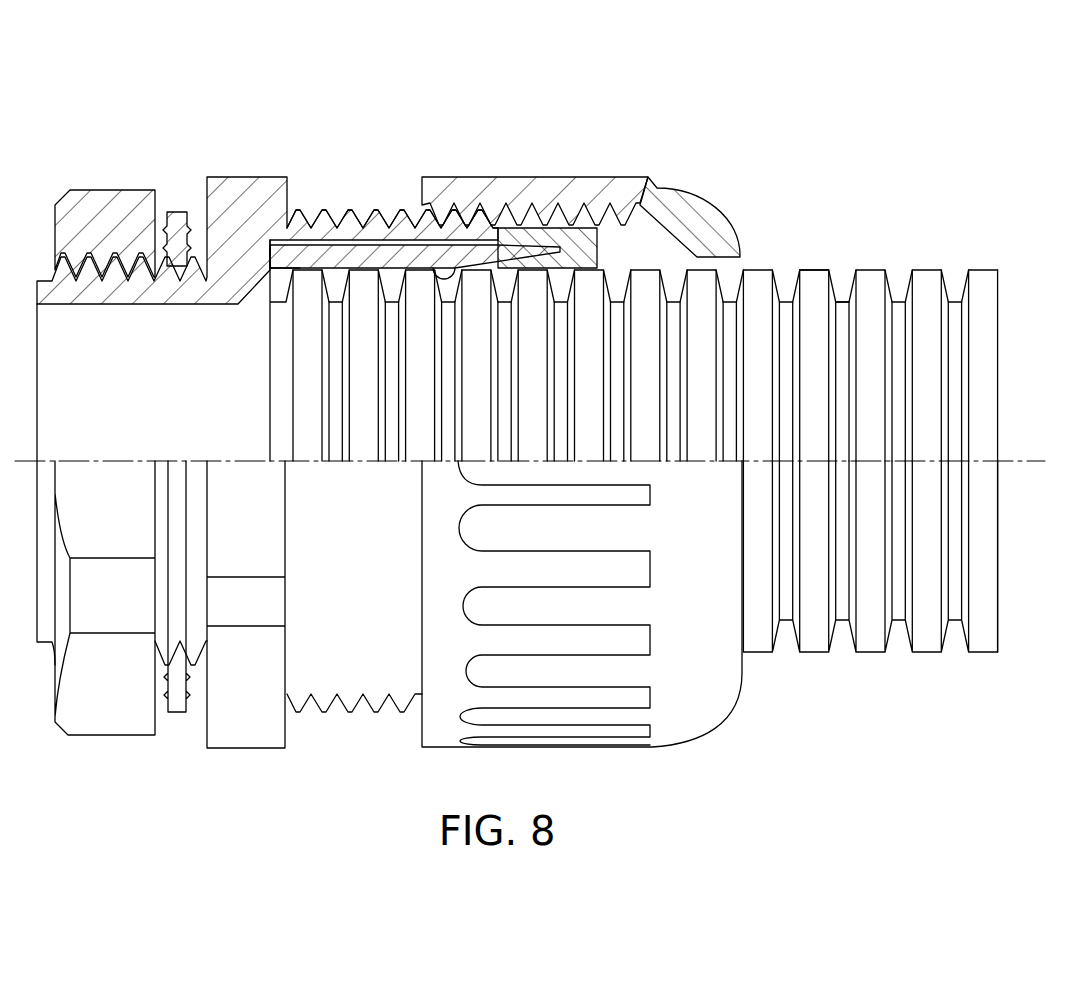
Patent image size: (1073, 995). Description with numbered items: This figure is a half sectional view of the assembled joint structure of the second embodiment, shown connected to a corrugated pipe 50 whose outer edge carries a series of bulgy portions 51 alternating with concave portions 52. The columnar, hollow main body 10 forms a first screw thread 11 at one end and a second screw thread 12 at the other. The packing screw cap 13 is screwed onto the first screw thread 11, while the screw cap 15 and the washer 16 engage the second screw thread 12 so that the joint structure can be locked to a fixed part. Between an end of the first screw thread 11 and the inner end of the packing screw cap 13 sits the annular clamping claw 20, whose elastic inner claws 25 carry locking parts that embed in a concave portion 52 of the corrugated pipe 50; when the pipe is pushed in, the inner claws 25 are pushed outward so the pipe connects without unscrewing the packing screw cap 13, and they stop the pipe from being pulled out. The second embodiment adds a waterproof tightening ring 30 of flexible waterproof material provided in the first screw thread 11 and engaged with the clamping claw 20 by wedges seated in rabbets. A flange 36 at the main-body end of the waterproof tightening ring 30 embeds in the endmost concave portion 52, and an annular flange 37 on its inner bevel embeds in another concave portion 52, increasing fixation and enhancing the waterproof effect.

The main body 10 is at (240, 193).
The first screw thread 11 is at (323, 223).
The second screw thread 12 is at (83, 267).
The packing screw cap 13 is at (582, 388).
The screw cap 15 is at (108, 210).
The washer 16 is at (176, 213).
The clamping claw 20 is at (575, 235).
The inner claw 25 is at (642, 223).
The waterproof tightening ring 30 is at (411, 165).
The flange 36 is at (285, 277).
The annular flange 37 is at (445, 263).
The corrugated pipe 50 is at (648, 383).
The bulgy portion 51 is at (812, 270).
The concave portion 52 is at (843, 298).